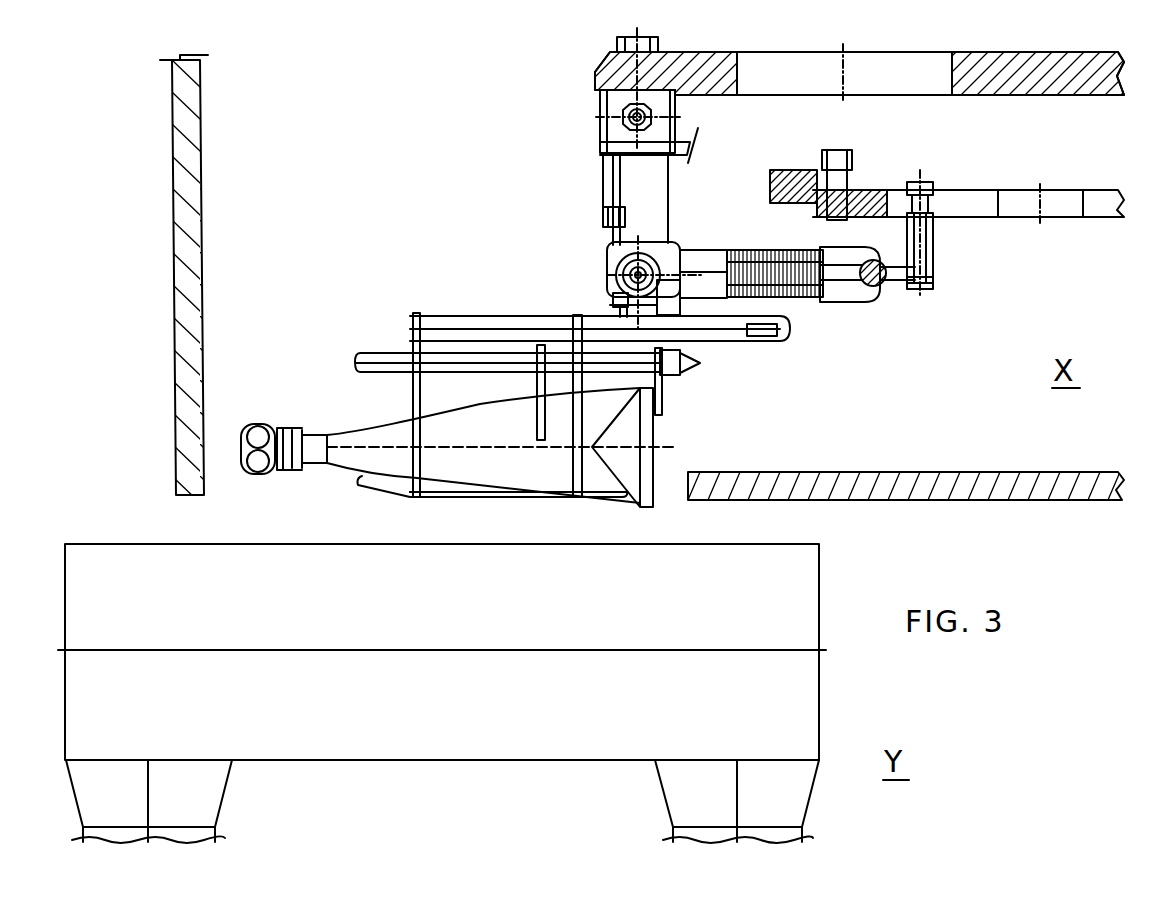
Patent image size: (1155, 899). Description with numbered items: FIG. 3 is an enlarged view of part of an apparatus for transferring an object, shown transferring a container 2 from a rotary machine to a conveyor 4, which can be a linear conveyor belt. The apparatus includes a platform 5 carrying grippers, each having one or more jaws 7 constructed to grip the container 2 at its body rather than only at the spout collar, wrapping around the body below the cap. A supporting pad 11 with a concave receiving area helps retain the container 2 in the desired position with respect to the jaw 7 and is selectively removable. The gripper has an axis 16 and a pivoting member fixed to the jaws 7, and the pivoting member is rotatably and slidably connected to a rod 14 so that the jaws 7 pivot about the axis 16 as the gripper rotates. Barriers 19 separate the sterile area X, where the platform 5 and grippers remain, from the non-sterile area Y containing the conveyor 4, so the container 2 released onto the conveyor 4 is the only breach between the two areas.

The container 2 is at (347, 463).
The conveyor 4 is at (805, 578).
The platform 5 is at (718, 66).
The jaw 7 is at (412, 397).
The pad 11 is at (537, 387).
The rod 14 is at (884, 287).
The axis 16 is at (608, 262).
The barrier 19 is at (194, 222).